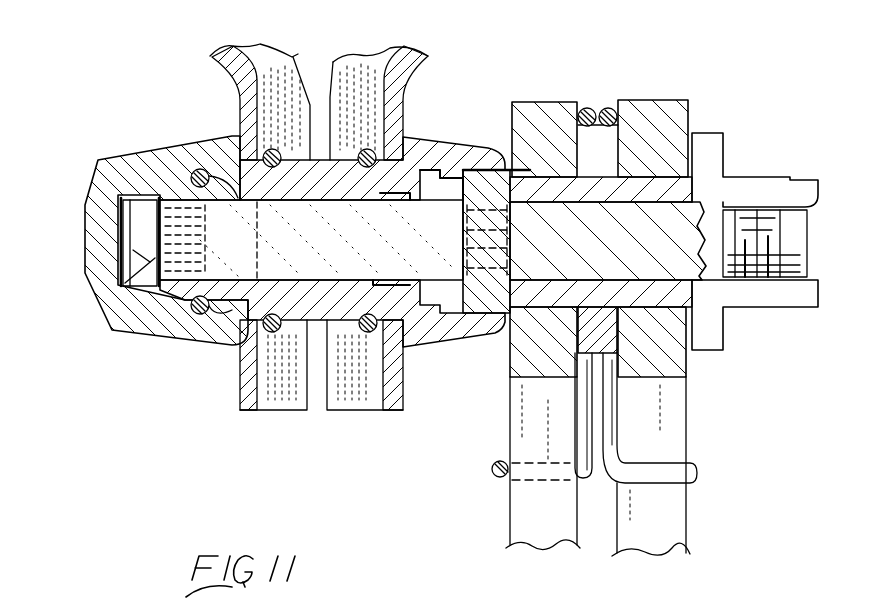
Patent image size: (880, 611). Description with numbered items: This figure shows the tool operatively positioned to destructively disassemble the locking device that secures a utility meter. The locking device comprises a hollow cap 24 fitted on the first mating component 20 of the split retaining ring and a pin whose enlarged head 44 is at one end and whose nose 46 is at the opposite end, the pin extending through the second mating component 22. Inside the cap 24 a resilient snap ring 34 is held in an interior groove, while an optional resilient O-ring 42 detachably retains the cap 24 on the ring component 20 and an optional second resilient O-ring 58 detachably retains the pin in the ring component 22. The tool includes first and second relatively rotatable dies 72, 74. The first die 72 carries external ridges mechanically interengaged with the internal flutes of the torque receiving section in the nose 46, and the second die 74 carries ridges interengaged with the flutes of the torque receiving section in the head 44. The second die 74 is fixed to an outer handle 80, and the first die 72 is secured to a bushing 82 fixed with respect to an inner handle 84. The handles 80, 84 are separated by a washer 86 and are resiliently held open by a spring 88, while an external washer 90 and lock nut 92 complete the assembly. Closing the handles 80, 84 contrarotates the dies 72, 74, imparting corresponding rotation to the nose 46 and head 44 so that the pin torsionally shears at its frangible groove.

The first mating component 20 is at (267, 417).
The second mating component 22 is at (377, 417).
The hollow cap 24 is at (108, 304).
The resilient snap ring 34 is at (177, 165).
The resilient O-ring 42 is at (270, 148).
The enlarged head 44 is at (443, 138).
The nose 46 is at (143, 200).
The second resilient O-ring 58 is at (372, 148).
The first die 72 is at (205, 238).
The second die 74 is at (477, 190).
The outer handle 80 is at (517, 520).
The bushing 82 is at (623, 194).
The inner handle 84 is at (673, 433).
The washer 86 is at (597, 150).
The spring 88 is at (608, 110).
The external washer 90 is at (738, 353).
The lock nut 92 is at (782, 298).